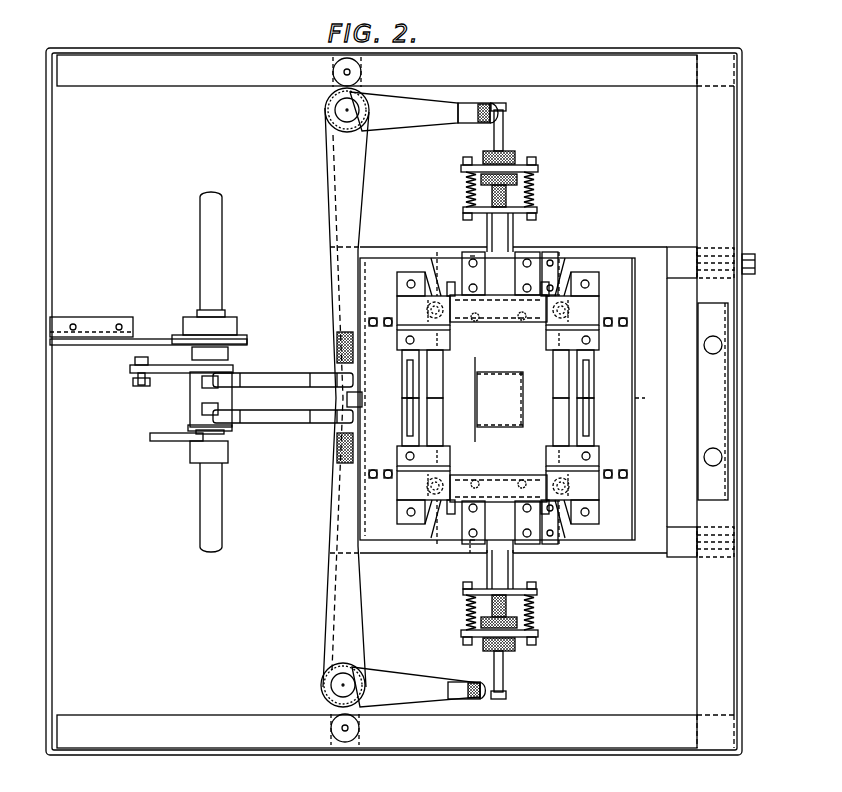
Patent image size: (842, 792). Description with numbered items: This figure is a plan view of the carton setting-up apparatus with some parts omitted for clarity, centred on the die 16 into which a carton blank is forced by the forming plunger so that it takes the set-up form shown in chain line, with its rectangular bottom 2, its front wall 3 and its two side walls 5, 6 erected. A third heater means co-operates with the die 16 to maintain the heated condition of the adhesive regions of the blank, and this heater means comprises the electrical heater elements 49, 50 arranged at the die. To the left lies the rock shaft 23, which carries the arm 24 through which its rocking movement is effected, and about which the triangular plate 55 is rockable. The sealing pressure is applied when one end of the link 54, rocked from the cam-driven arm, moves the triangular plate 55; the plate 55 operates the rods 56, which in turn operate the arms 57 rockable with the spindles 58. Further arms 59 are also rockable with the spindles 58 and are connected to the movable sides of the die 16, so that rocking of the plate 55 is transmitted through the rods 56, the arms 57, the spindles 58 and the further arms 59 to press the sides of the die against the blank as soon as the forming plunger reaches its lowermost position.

The bottom 2 is at (511, 399).
The front wall 3 is at (524, 395).
The side wall 5 is at (497, 429).
The side wall 6 is at (505, 372).
The die 16 is at (528, 560).
The rock shaft 23 is at (212, 503).
The arm 24 is at (168, 439).
The electrical heater element 49 is at (521, 319).
The electrical heater element 50 is at (437, 253).
The link 54 is at (136, 382).
The triangular plate 55 is at (176, 366).
The rods 56 is at (276, 418).
The arms 57 is at (340, 184).
The spindles 58 is at (345, 110).
The further arms 59 is at (415, 112).